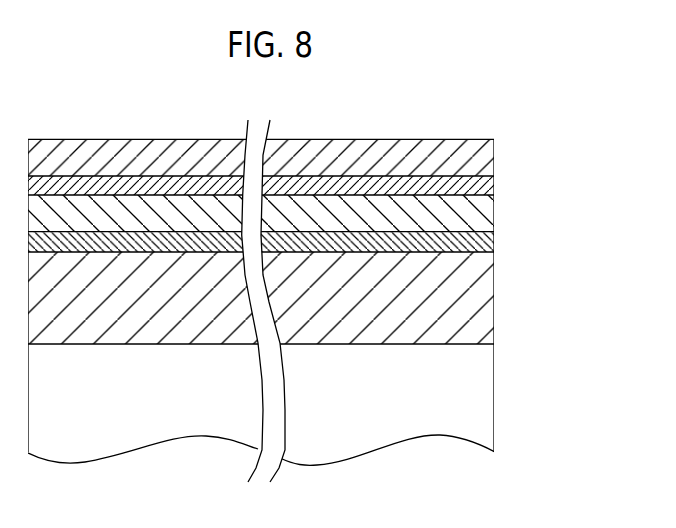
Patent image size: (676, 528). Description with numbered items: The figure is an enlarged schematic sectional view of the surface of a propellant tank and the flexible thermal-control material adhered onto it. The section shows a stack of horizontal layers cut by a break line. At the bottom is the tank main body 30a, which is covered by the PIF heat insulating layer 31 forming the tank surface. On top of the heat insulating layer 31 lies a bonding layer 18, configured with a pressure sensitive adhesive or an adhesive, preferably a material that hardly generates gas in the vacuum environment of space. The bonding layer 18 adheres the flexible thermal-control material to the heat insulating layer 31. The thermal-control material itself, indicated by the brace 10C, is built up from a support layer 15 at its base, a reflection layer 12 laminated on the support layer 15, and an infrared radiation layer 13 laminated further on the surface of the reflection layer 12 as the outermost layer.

The infrared radiation layer 13 is at (483, 152).
The reflection layer 12 is at (490, 182).
The support layer 15 is at (289, 214).
The bonding layer 18 is at (490, 238).
The PIF heat insulating layer 31 is at (483, 290).
The tank main body 30a is at (496, 392).
The laminated film 10C is at (322, 186).